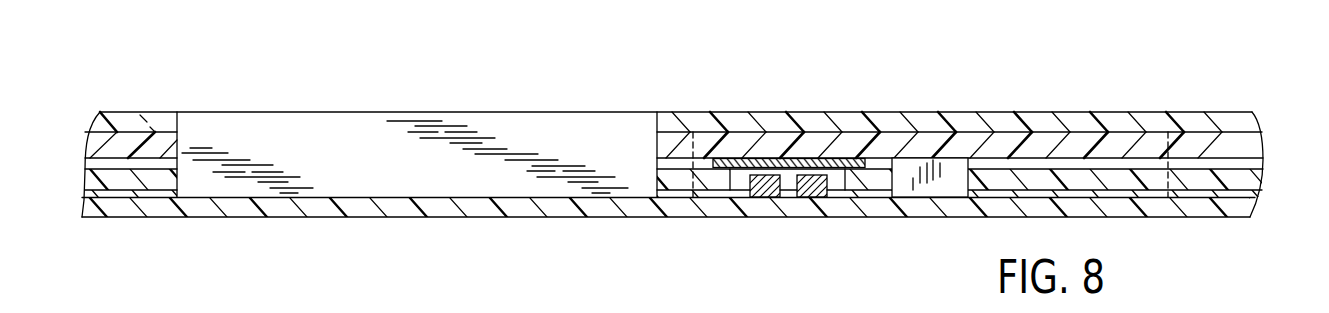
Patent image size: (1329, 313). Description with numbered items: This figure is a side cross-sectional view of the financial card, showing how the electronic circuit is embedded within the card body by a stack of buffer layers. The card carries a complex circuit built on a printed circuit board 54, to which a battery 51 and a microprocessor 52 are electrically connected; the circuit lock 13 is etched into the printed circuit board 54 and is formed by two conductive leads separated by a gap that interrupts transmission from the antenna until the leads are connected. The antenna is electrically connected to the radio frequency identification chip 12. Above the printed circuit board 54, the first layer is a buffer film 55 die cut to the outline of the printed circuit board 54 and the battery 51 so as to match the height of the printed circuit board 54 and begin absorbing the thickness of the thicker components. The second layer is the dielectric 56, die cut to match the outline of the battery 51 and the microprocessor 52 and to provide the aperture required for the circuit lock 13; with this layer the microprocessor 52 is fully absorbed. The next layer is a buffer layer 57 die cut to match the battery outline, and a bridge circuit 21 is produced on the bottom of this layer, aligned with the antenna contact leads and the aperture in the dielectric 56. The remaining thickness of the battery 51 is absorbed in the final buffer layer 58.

The radio frequency identification chip 12 is at (672, 212).
The circuit lock 13 is at (791, 190).
The bridge circuit 21 is at (843, 160).
The battery 51 is at (373, 156).
The microprocessor 52 is at (937, 188).
The printed circuit board 54 is at (1247, 217).
The buffer film 55 is at (1262, 192).
The dielectric 56 is at (1255, 163).
The buffer layer 57 is at (1263, 143).
The final buffer layer 58 is at (1262, 113).